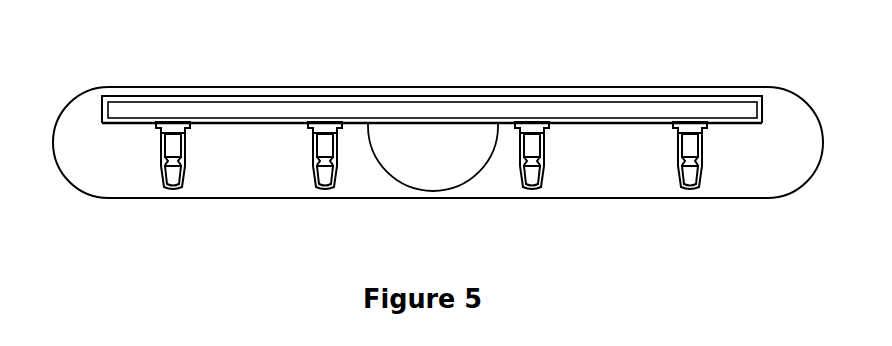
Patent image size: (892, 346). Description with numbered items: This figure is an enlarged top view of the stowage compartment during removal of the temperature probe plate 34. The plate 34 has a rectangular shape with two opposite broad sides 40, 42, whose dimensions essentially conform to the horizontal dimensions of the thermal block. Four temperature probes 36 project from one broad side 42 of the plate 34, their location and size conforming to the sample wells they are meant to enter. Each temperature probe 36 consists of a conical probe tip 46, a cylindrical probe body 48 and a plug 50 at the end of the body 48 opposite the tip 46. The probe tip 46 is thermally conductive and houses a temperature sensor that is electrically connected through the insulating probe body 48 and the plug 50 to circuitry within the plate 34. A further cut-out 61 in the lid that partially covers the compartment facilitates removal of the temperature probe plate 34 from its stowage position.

The temperature probe plate 34 is at (463, 108).
The temperature probes 36 is at (534, 137).
The broad side 40 is at (249, 104).
The broad side 42 is at (250, 123).
The conical probe tip 46 is at (178, 172).
The cylindrical probe body 48 is at (172, 141).
The plug 50 is at (173, 123).
The further cut-out 61 is at (412, 155).